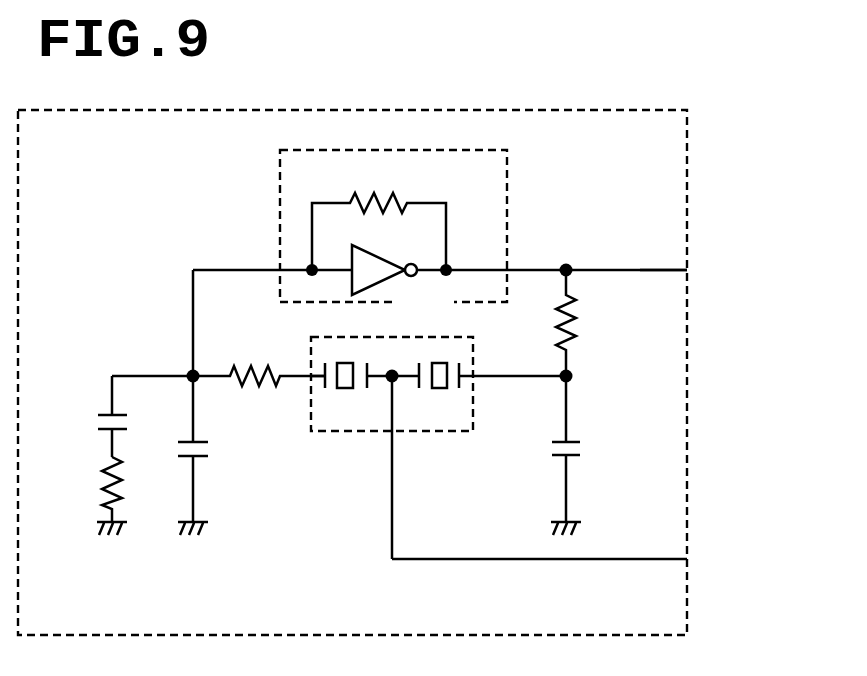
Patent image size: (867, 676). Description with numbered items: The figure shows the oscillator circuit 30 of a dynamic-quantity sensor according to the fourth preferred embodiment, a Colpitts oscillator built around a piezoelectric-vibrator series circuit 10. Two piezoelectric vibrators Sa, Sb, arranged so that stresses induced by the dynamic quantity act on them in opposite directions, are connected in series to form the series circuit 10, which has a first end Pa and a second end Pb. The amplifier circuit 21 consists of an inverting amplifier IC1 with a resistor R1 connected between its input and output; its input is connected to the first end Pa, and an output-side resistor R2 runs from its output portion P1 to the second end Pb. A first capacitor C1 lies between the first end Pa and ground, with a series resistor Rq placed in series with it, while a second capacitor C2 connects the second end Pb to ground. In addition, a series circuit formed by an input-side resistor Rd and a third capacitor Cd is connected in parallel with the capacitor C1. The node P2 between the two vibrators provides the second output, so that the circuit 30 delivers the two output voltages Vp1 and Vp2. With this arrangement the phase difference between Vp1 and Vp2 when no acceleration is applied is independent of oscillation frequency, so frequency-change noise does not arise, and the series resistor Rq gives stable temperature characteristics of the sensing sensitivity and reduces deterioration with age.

The oscillator circuit 30 is at (687, 110).
The amplifier circuit 21 is at (437, 150).
The piezoelectric-vibrator series circuit 10 is at (312, 432).
The output portion of the amplifier circuit P1 is at (512, 270).
The second node P2 is at (393, 432).
The first end of the piezoelectric-vibrator series circuit Pa is at (313, 374).
The second end of the piezoelectric-vibrator series circuit Pb is at (473, 374).
The resistor R1 is at (379, 213).
The output-side resistor R2 is at (590, 323).
The series resistor Rq is at (259, 356).
The input-side resistor Rd is at (87, 496).
The third capacitor Cd is at (87, 416).
The first capacitor C1 is at (180, 455).
The second capacitor C2 is at (587, 453).
The inverting amplifier IC1 is at (398, 283).
The piezoelectric vibrator Sa is at (358, 395).
The piezoelectric vibrator Sb is at (432, 395).
The output voltage Vp1 is at (702, 273).
The output voltage Vp2 is at (578, 564).